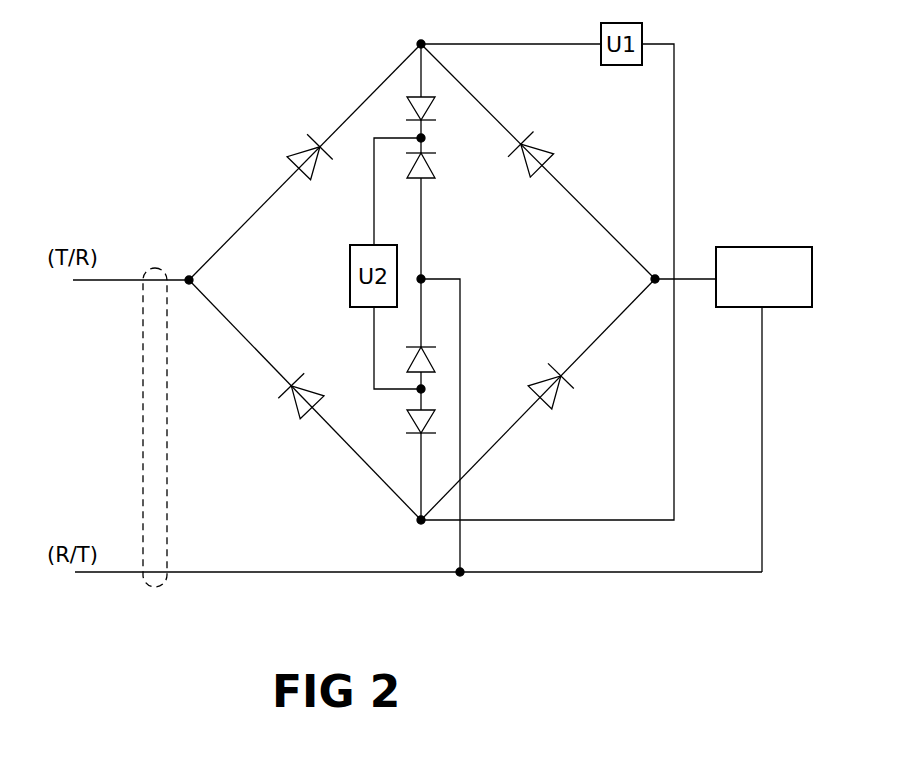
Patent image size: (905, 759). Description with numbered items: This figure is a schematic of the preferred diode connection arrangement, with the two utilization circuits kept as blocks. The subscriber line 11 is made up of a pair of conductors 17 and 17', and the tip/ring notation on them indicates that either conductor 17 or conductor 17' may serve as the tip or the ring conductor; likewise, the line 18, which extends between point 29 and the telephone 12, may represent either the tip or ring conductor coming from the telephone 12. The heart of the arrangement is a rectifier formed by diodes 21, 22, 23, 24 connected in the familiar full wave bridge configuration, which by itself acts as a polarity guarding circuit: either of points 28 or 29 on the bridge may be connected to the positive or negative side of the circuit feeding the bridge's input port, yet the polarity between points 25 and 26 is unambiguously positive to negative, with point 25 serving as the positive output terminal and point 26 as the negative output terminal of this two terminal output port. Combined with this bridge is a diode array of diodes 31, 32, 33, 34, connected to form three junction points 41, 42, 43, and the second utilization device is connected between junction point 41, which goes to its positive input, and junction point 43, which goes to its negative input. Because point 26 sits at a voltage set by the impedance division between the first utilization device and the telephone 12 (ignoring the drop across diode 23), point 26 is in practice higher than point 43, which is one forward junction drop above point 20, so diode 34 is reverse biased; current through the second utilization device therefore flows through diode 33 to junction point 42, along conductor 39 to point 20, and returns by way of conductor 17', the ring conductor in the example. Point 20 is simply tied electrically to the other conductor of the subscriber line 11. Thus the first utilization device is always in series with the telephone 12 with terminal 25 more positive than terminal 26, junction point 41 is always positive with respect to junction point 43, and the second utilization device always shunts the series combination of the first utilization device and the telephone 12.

The subscriber line 11 is at (148, 268).
The telephone 12 is at (790, 246).
The conductor 17 is at (126, 299).
The conductor 17' is at (414, 595).
The line 18 is at (682, 283).
The point 20 is at (460, 574).
The diode 21 is at (303, 148).
The diode 22 is at (540, 150).
The diode 23 is at (558, 395).
The diode 24 is at (301, 419).
The point 25 is at (419, 43).
The point 26 is at (422, 522).
The point 28 is at (192, 281).
The point 29 is at (652, 279).
The diode 31 is at (433, 104).
The diode 32 is at (425, 178).
The diode 33 is at (430, 352).
The diode 34 is at (418, 436).
The conductor 39 is at (461, 536).
The junction point 41 is at (425, 138).
The junction point 42 is at (424, 278).
The junction point 43 is at (425, 389).